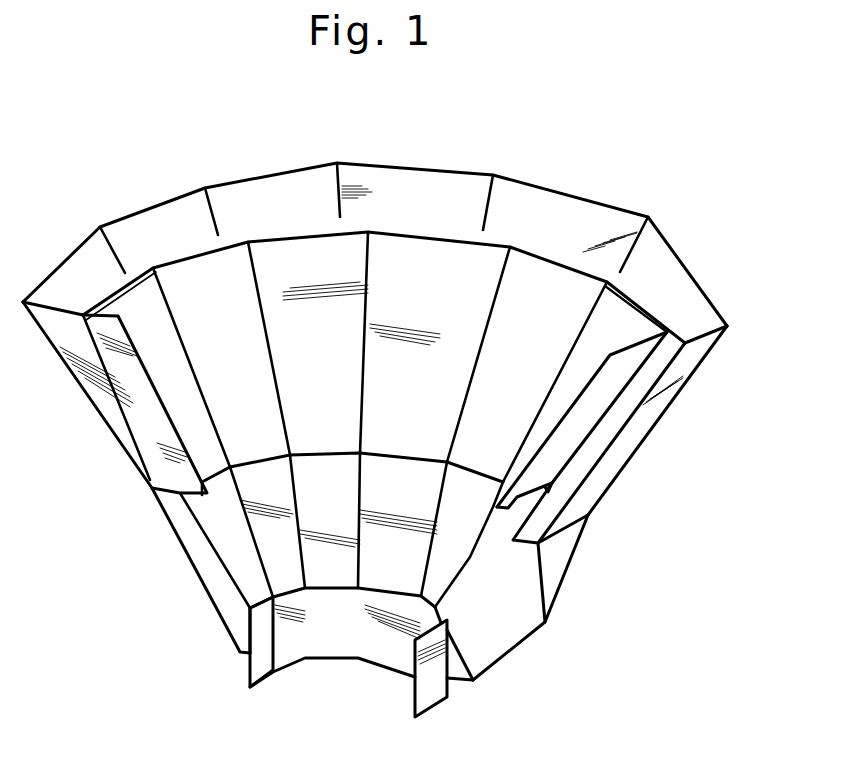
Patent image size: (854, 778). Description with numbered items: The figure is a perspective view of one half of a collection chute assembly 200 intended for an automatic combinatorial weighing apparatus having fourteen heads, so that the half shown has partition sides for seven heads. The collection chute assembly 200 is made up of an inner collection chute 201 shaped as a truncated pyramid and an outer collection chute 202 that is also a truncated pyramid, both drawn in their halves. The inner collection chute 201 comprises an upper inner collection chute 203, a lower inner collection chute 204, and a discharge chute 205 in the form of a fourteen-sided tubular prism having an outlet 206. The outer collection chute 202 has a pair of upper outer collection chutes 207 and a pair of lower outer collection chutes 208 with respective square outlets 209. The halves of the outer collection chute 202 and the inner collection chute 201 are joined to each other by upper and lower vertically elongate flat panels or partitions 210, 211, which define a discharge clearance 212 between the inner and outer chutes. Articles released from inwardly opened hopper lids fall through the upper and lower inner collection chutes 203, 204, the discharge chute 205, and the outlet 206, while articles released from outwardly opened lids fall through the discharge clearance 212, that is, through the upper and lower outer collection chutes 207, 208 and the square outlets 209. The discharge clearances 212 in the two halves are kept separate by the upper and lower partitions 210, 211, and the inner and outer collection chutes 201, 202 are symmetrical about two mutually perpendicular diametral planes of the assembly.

The collection chute assembly 200 is at (727, 181).
The inner collection chute 201 is at (428, 237).
The outer collection chute 202 is at (272, 168).
The discharge clearance 212 is at (543, 197).
The upper outer collection chute 207 is at (677, 290).
The upper inner collection chute 203 is at (213, 373).
The lower inner collection chute 204 is at (220, 533).
The discharge chute 205 is at (329, 642).
The outlet 206 is at (392, 672).
The lower outer collection chute 208 is at (560, 560).
The square outlet 209 is at (488, 670).
The upper partition 210 is at (607, 488).
The lower partition 211 is at (222, 590).